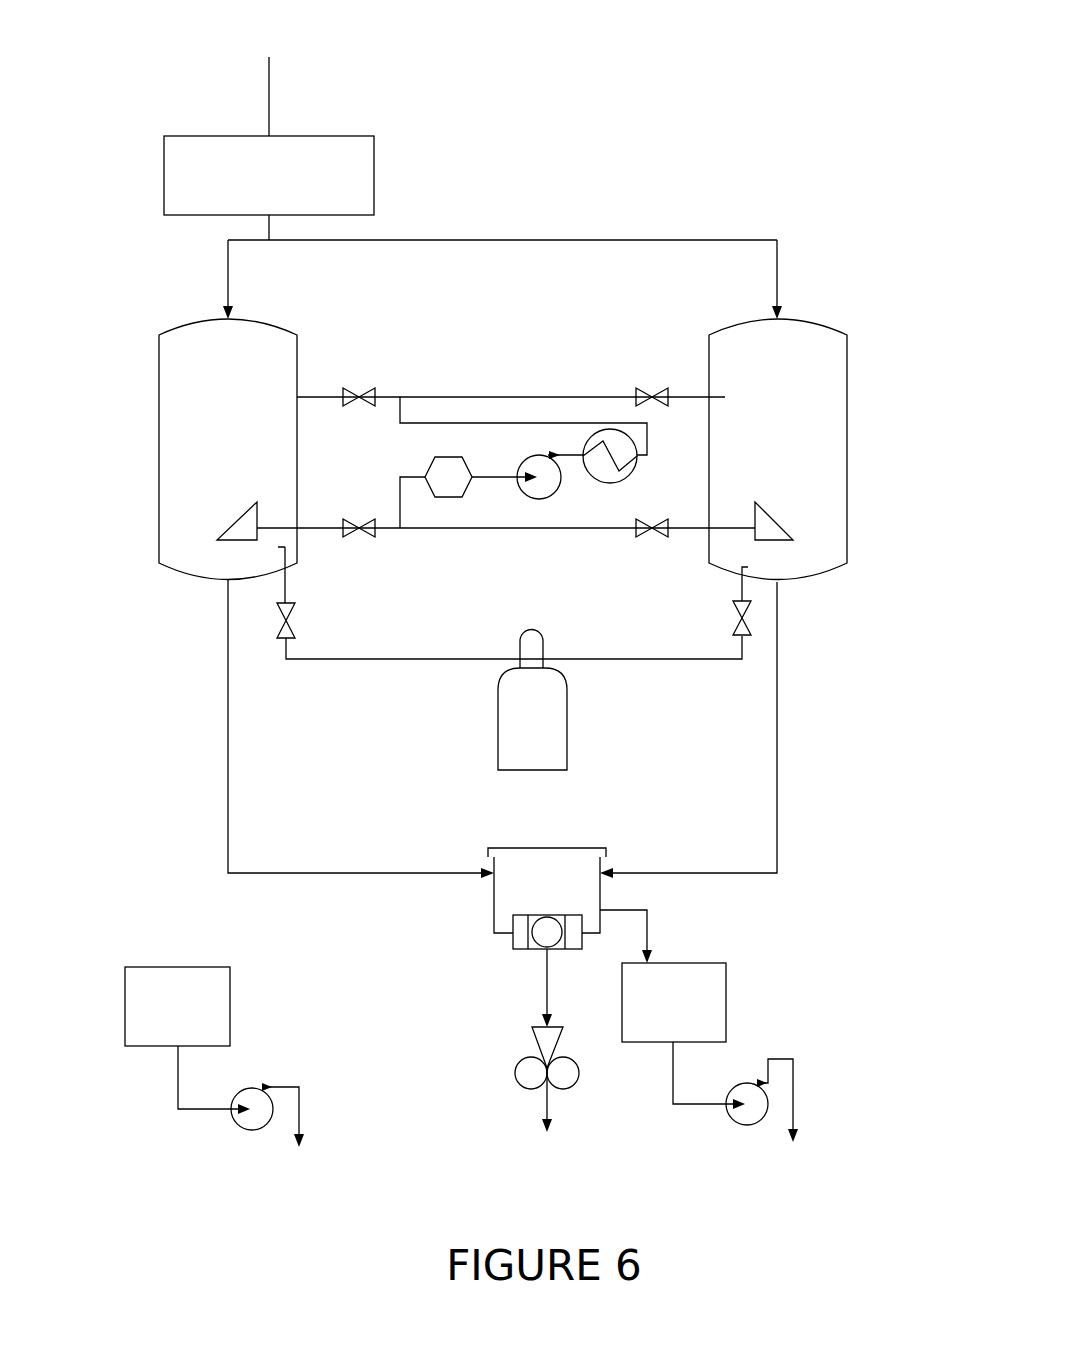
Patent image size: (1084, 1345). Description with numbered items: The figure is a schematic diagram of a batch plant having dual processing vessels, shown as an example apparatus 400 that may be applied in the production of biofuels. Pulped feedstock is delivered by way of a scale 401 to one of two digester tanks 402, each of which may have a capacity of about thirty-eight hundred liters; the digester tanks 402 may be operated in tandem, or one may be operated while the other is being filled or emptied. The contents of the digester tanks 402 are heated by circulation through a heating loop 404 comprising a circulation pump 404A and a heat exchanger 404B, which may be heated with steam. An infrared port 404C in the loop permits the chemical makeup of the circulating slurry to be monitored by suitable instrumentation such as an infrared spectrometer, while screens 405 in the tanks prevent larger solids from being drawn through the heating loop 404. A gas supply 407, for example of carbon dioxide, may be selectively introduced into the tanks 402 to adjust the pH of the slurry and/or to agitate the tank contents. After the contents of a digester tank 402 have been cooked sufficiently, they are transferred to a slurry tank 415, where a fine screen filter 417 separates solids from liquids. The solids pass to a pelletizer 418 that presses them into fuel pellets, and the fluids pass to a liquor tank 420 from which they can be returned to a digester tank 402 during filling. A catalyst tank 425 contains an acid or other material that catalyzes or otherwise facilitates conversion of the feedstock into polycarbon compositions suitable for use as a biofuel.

The apparatus 400 is at (774, 121).
The scale 401 is at (352, 136).
The digester tank 402 is at (182, 326).
The heating loop 404 is at (472, 364).
The circulation pump 404A is at (539, 499).
The heat exchanger 404B is at (610, 483).
The infrared port 404C is at (434, 497).
The screen 405 is at (243, 538).
The gas supply 407 is at (532, 753).
The slurry tank 415 is at (547, 847).
The fine screen filter 417 is at (527, 949).
The pelletizer 418 is at (533, 1038).
The liquor tank 420 is at (673, 963).
The catalyst tank 425 is at (178, 967).